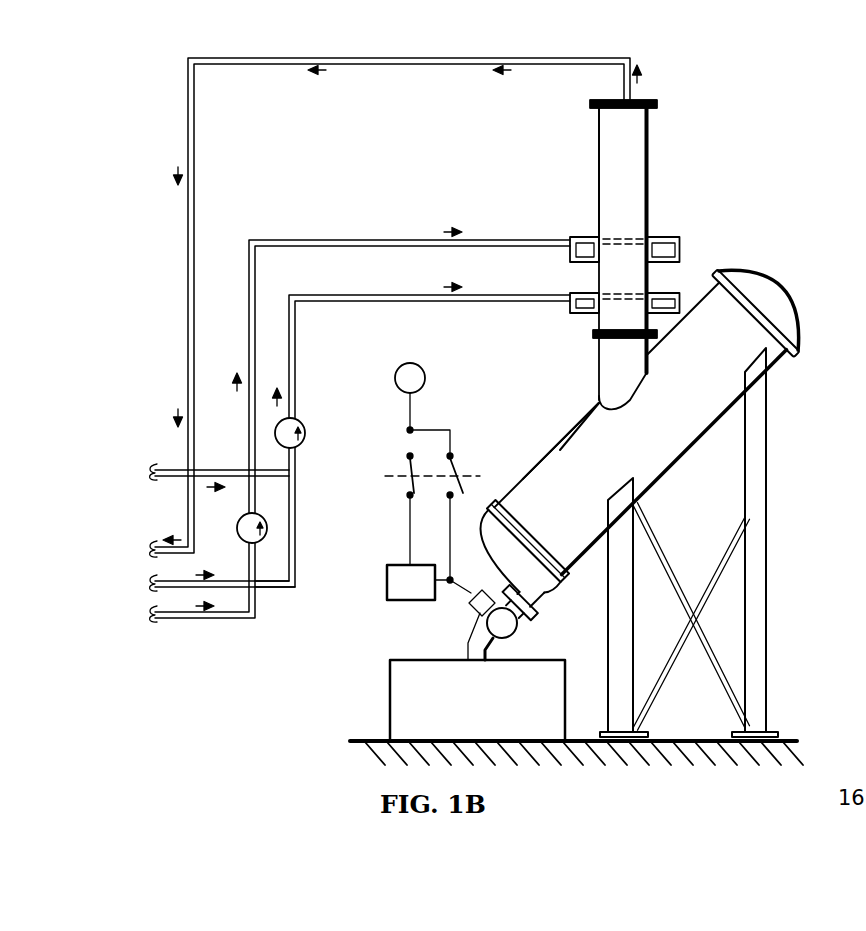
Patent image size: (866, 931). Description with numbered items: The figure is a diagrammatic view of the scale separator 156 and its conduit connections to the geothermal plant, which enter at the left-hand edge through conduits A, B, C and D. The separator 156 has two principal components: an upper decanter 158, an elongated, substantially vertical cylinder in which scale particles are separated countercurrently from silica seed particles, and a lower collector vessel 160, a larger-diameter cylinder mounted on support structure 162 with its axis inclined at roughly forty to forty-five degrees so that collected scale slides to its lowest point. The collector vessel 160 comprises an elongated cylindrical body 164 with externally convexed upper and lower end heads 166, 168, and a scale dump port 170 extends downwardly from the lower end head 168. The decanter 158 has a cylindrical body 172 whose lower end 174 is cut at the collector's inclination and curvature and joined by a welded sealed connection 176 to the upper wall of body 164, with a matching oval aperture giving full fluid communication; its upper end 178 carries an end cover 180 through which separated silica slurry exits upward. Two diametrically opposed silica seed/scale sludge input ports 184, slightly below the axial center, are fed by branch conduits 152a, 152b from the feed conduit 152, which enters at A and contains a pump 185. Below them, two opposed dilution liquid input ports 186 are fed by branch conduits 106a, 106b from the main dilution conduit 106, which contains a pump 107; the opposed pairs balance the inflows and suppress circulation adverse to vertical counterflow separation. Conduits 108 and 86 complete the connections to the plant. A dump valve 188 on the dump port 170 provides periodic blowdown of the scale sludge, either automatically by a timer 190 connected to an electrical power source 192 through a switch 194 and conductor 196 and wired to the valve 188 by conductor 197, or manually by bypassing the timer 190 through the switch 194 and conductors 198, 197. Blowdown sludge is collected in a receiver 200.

The inlet line 86 is at (264, 588).
The main dilution conduit 106 is at (508, 295).
The branch conduit 106a is at (577, 315).
The branch conduit 106b is at (676, 314).
The pump 107 is at (306, 424).
The return line 108 is at (382, 65).
The silica seed/scale feed conduit 152 is at (508, 240).
The branch conduit 152a is at (572, 250).
The branch conduit 152b is at (680, 250).
The scale separator 156 is at (705, 292).
The decanter 158 is at (658, 210).
The collector vessel 160 is at (560, 447).
The support structure 162 is at (772, 519).
The cylindrical body 164 is at (659, 452).
The upper end head 166 is at (790, 306).
The lower end head 168 is at (499, 572).
The scale dump port 170 is at (542, 594).
The cylindrical body 172 is at (644, 199).
The lower end 174 is at (594, 404).
The sealed connection 176 is at (649, 383).
The upper end 178 is at (594, 125).
The end cover 180 is at (658, 102).
The silica seed/scale sludge input ports 184 is at (596, 266).
The pump 185 is at (268, 527).
The dilution liquid input ports 186 is at (649, 323).
The dump valve 188 is at (522, 633).
The timer 190 is at (396, 602).
The electrical power source 192 is at (423, 370).
The switch 194 is at (402, 468).
The conductor 196 is at (410, 548).
The conductor 197 is at (452, 587).
The conductor 198 is at (448, 552).
The receiver 200 is at (500, 710).